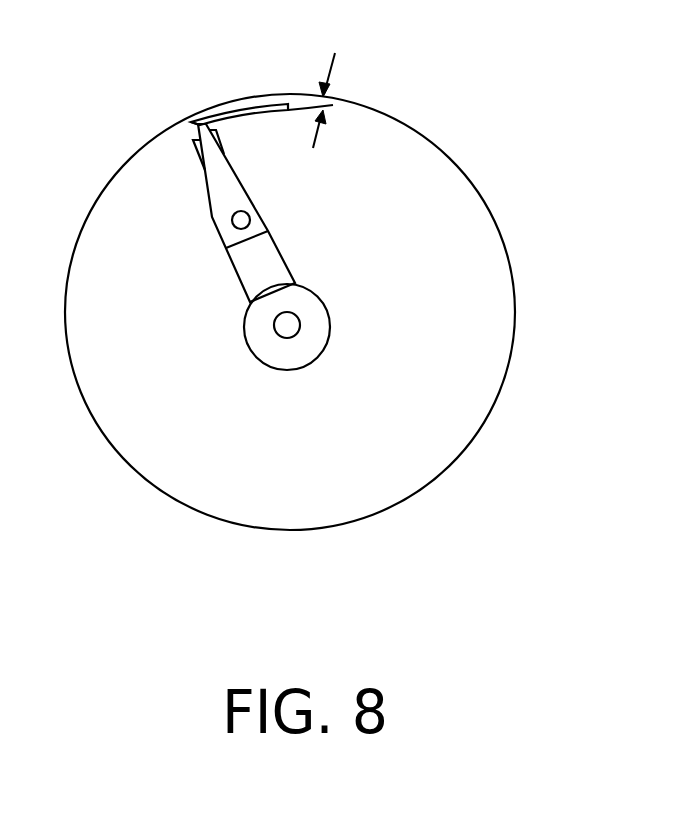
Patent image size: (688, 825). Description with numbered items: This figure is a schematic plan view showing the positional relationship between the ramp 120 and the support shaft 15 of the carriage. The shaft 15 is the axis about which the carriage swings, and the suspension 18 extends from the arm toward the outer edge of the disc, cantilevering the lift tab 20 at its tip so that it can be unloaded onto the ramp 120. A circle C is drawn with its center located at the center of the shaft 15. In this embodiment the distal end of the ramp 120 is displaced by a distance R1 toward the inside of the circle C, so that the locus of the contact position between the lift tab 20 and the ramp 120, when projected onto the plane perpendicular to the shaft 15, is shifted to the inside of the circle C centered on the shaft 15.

The circle C is at (477, 192).
The support shaft 15 is at (287, 325).
The suspension 18 is at (220, 177).
The lift tab 20 is at (191, 123).
The ramp 120 is at (232, 107).
The displacement R1 is at (325, 80).